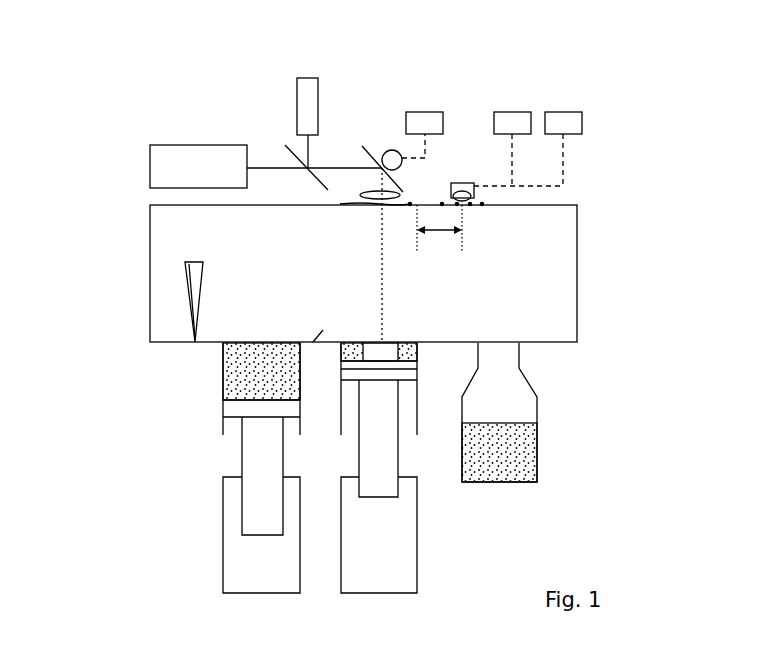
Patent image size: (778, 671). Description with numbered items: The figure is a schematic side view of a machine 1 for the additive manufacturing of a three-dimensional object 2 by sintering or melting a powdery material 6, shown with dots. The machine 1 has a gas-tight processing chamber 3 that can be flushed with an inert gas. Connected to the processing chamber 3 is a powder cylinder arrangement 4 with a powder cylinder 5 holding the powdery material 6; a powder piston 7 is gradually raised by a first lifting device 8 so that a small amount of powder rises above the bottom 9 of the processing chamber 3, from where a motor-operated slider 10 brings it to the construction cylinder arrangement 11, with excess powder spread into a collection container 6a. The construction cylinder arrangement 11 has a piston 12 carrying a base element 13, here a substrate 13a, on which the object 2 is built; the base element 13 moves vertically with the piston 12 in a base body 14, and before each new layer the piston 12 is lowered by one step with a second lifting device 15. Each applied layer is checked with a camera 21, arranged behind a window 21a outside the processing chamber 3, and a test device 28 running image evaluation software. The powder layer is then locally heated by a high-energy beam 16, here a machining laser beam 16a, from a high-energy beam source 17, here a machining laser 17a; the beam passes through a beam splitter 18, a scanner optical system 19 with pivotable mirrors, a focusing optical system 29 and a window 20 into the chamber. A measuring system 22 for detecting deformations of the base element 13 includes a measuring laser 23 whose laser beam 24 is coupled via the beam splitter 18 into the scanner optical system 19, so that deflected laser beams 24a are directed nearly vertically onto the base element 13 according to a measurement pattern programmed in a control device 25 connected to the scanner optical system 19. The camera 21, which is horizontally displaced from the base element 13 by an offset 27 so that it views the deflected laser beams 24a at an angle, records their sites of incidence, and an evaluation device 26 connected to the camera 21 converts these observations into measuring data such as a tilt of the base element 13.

The machine 1 is at (168, 78).
The three-dimensional object 2 is at (363, 360).
The processing chamber 3 is at (578, 214).
The powder cylinder arrangement 4 is at (184, 468).
The powder cylinder 5 is at (184, 468).
The powdery material 6 is at (227, 362).
The collection container 6a is at (525, 412).
The powder piston 7 is at (243, 408).
The first lifting device 8 is at (232, 525).
The bottom 9 is at (313, 342).
The slider 10 is at (185, 264).
The construction cylinder arrangement 11 is at (392, 438).
The piston 12 is at (350, 393).
The base element 13 is at (359, 446).
The substrate 13a is at (380, 364).
The base body 14 is at (405, 322).
The second lifting device 15 is at (405, 538).
The high-energy beam 16 is at (266, 146).
The machining laser beam 16a is at (283, 167).
The high-energy beam source 17 is at (142, 157).
The machining laser 17a is at (168, 168).
The beam splitter 18 is at (330, 190).
The scanner optical system 19 is at (381, 167).
The window 20 is at (410, 204).
The camera 21 is at (473, 183).
The window 21a is at (482, 205).
The measuring system 22 is at (258, 86).
The measuring laser 23 is at (300, 92).
The laser beam 24 is at (312, 143).
The deflected laser beams 24a is at (378, 268).
The control device 25 is at (428, 120).
The evaluation device 26 is at (516, 120).
The offset 27 is at (439, 233).
The test device 28 is at (568, 120).
The focusing optical system 29 is at (374, 195).